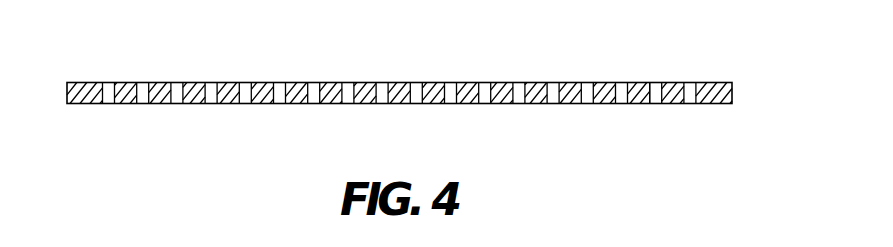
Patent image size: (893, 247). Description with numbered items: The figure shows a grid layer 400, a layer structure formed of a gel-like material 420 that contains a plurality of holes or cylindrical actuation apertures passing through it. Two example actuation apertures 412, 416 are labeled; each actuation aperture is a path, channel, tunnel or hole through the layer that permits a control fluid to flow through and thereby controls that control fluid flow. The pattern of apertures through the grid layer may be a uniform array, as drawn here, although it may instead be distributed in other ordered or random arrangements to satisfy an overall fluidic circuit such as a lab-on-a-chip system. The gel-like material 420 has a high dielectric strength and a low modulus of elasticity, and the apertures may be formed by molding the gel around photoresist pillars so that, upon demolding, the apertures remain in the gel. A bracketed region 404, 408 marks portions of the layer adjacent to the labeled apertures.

The grid layer 400 is at (249, 70).
The layer 404 is at (658, 70).
The layer 408 is at (658, 70).
The actuation aperture 412 is at (619, 98).
The actuation aperture 416 is at (651, 98).
The gel-like material 420 is at (733, 93).